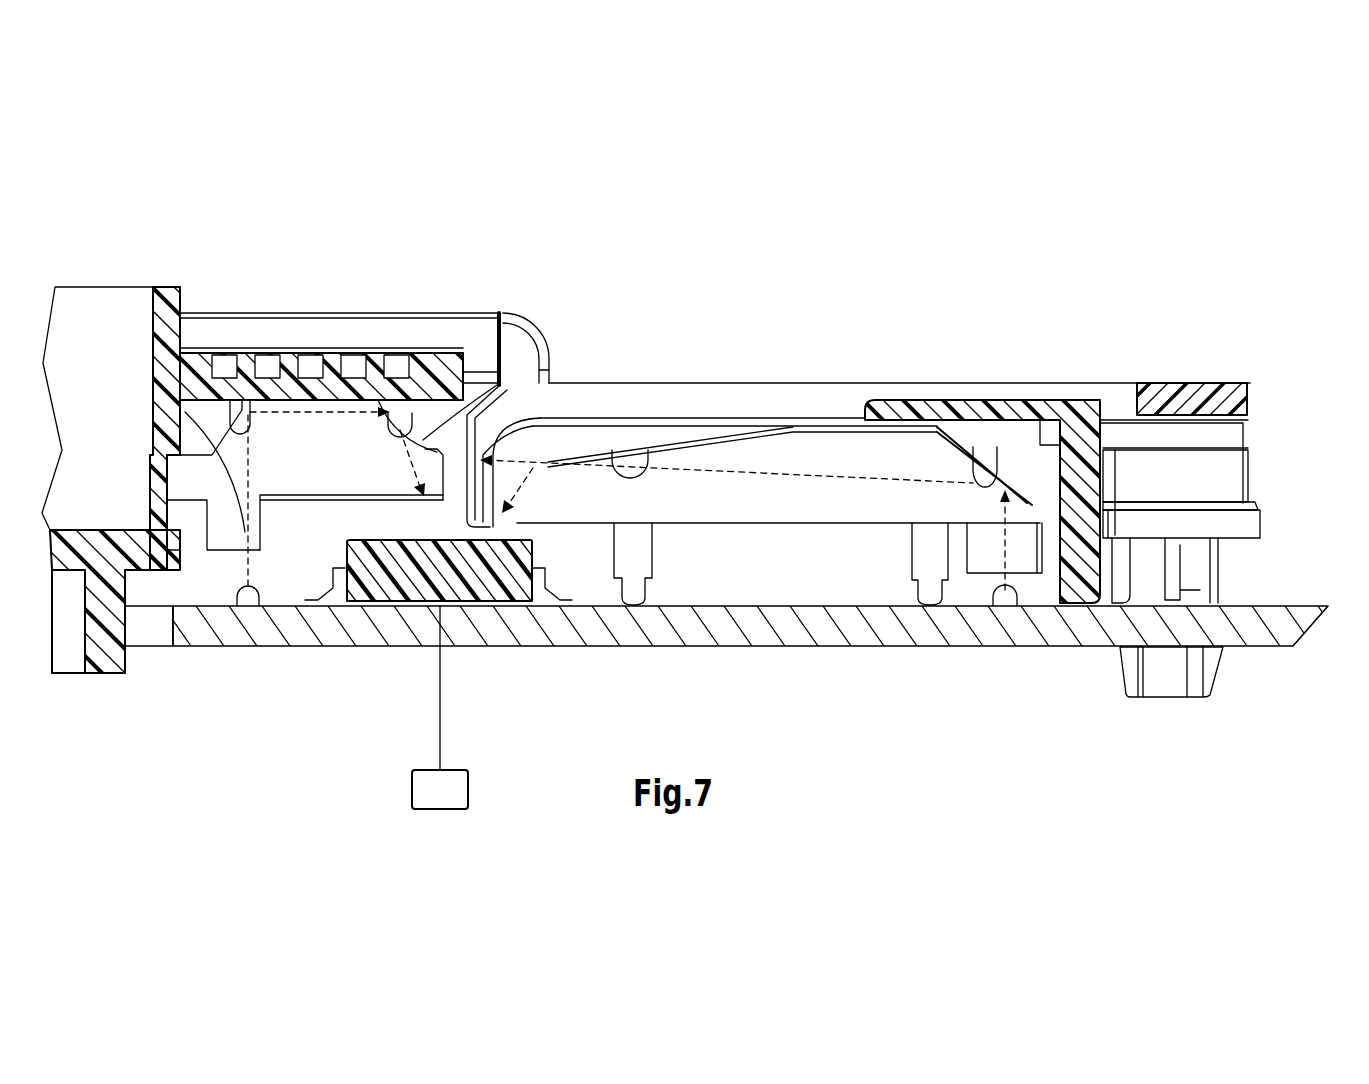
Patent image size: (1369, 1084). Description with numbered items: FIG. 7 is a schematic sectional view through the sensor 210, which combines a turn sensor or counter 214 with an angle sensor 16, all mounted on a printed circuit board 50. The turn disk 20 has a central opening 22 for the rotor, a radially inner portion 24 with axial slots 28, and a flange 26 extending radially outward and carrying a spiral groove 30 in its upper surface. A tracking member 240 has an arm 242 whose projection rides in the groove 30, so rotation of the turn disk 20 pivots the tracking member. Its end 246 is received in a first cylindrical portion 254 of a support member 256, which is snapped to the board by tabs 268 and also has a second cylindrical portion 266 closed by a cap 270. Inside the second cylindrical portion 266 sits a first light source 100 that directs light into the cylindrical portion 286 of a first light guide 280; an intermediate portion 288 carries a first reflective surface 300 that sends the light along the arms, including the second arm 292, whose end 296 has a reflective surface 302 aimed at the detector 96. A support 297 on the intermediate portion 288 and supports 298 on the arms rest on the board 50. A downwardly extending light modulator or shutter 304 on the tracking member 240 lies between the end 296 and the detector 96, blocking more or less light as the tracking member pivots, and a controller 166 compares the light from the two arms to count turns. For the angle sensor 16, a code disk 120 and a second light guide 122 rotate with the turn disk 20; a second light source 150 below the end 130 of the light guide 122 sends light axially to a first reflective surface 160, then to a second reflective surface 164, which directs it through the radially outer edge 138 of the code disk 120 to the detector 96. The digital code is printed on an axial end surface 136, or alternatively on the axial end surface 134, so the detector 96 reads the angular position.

The angle sensor 16 is at (215, 695).
The turn disk 20 is at (168, 300).
The central opening 22 is at (140, 327).
The radially inner portion 24 is at (150, 462).
The flange 26 is at (525, 330).
The slots 28 is at (167, 520).
The spiral groove 30 is at (297, 325).
The printed circuit board 50 is at (1280, 623).
The detector 96 is at (467, 573).
The first light source 100 is at (1005, 602).
The code disk 120 is at (308, 503).
The second light guide 122 is at (329, 440).
The end 130 is at (212, 455).
The axial end surface 134 is at (340, 497).
The axial end surface 136 is at (340, 500).
The radially outer edge 138 is at (533, 385).
The second light source 150 is at (237, 595).
The first reflective surface 160 is at (236, 410).
The second reflective surface 164 is at (420, 382).
The controller 166 is at (428, 787).
The sensor 210 is at (645, 280).
The turn sensor or counter 214 is at (1278, 399).
The tracking member 240 is at (700, 400).
The arm 242 is at (452, 325).
The end 246 is at (1210, 390).
The first cylindrical portion 254 is at (1218, 482).
The support member 256 is at (1242, 527).
The second cylindrical portion 266 is at (1080, 480).
The tabs 268 is at (1172, 675).
The cap 270 is at (1010, 400).
The first light guide 280 is at (763, 507).
The cylindrical portion 286 is at (1028, 562).
The intermediate portion 288 is at (960, 490).
The second arm 292 is at (775, 460).
The end 296 is at (535, 497).
The support 297 is at (923, 560).
The supports 298 is at (640, 563).
The first reflective surface 300 is at (985, 478).
The reflective surfaces 302 is at (613, 453).
The light modulator or shutter 304 is at (465, 500).